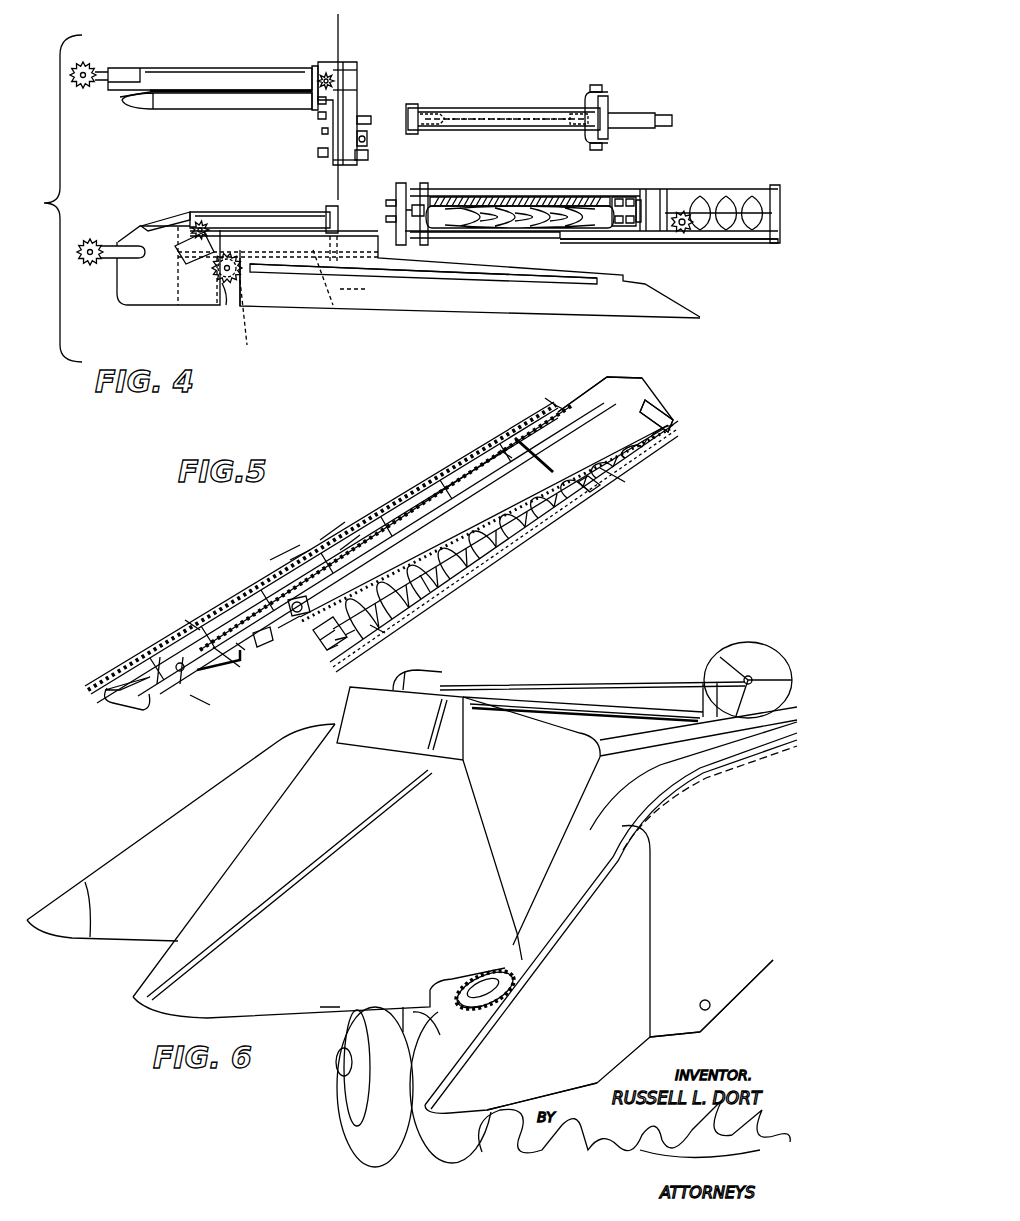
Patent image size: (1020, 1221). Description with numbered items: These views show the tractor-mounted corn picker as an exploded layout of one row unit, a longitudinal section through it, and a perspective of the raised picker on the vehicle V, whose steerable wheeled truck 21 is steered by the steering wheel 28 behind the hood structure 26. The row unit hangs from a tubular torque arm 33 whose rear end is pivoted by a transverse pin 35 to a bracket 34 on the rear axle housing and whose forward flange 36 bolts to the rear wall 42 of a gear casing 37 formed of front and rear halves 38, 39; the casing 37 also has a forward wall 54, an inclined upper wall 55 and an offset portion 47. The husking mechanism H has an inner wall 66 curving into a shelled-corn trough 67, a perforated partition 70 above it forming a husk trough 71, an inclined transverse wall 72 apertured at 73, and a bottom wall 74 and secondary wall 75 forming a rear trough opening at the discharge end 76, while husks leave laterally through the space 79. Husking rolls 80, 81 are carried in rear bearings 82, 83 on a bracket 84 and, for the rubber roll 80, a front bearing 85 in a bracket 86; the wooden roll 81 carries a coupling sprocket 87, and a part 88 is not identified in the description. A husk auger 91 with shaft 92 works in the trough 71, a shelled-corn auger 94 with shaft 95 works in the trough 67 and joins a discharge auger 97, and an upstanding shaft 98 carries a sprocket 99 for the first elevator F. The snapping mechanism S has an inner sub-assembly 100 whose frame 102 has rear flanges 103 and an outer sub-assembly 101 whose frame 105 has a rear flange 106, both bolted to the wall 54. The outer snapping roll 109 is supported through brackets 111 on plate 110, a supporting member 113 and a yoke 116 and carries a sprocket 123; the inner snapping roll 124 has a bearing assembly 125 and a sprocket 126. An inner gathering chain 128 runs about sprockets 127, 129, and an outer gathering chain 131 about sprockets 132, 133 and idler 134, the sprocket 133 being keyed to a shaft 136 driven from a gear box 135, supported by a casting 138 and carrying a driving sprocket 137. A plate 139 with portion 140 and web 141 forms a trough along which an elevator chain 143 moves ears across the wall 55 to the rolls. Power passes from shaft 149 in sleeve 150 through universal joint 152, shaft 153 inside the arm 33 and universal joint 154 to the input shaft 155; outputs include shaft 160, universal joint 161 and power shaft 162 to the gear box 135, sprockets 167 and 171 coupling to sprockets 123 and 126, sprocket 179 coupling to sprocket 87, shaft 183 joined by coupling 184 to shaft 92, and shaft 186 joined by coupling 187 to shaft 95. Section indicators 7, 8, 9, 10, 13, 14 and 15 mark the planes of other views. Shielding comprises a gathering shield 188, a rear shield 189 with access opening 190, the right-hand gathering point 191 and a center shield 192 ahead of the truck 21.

In FIG. 4, the section line 7- 7 is at (204, 195).
In FIG. 4, the section line 8- 8 is at (324, 22).
In FIG. 4, the section line 9- 9 is at (354, 33).
In FIG. 4, the section line 10- 10 is at (404, 132).
In FIG. 4, the section line 13- 13 is at (412, 163).
In FIG. 4, the section line 14- 14 is at (330, 208).
In FIG. 4, the section line 15- 15 is at (306, 38).
In FIG. 6, the steerable wheeled truck 21 is at (400, 1160).
In FIG. 6, the radiator and engine hood structure 26 is at (465, 680).
In FIG. 6, the steering wheel 28 is at (760, 640).
In FIG. 4, the torque arm 33 is at (512, 108).
In FIG. 4, the bracket 34 is at (608, 100).
In FIG. 4, the transverse pivot pin 35 is at (595, 85).
In FIG. 4, the flange 36 is at (412, 106).
In FIG. 4, the casing 37 is at (349, 67).
In FIG. 5, the casing 37 is at (347, 646).
In FIG. 5, the front half of casing 38 is at (330, 651).
In FIG. 5, the rear half of casing 39 is at (352, 640).
In FIG. 4, the rear wall 42 is at (350, 86).
In FIG. 4, the offset casing portion 47 is at (345, 80).
In FIG. 5, the offset casing portion 47 is at (300, 553).
In FIG. 5, the forward wall 54 is at (330, 646).
In FIG. 4, the upper transverse wall 55 is at (354, 163).
In FIG. 4, the inner longitudinal wall 66 is at (634, 190).
In FIG. 5, the inner longitudinal wall 66 is at (637, 378).
In FIG. 5, the trough 67 is at (535, 522).
In FIG. 5, the longitudinal partition 70 is at (475, 560).
In FIG. 5, the second trough 71 is at (450, 570).
In FIG. 4, the forwardly inclined transverse wall 72 is at (672, 195).
In FIG. 5, the forwardly inclined transverse wall 72 is at (515, 460).
In FIG. 5, the aperture 73 is at (586, 494).
In FIG. 5, the bottom wall 74 is at (615, 481).
In FIG. 4, the secondary substantially vertical wall 75 is at (735, 243).
In FIG. 4, the discharge end 76 is at (776, 190).
In FIG. 5, the discharge end 76 is at (672, 420).
In FIG. 5, the discharge space 79 is at (490, 460).
In FIG. 4, the inner husking roll 80 is at (462, 204).
In FIG. 4, the outer husking roll 81 is at (510, 228).
In FIG. 5, the outer husking roll 81 is at (440, 480).
In FIG. 4, the bearing 82 is at (638, 196).
In FIG. 4, the bearing 83 is at (630, 228).
In FIG. 5, the bearing 83 is at (505, 455).
In FIG. 4, the transverse bracket 84 is at (619, 228).
In FIG. 4, the bearing 85 is at (426, 196).
In FIG. 4, the bracket 86 is at (434, 198).
In FIG. 4, the sprocket 87 is at (420, 216).
In FIG. 4, the support plate 88 is at (598, 240).
In FIG. 5, the husk auger 91 is at (410, 510).
In FIG. 4, the shaft portion 92 is at (396, 224).
In FIG. 5, the shelled-corn auger 94 is at (425, 585).
In FIG. 4, the shaft portion 95 is at (398, 205).
In FIG. 4, the discharge auger 97 is at (732, 200).
In FIG. 5, the discharge auger 97 is at (645, 405).
In FIG. 4, the upstanding shaft 98 is at (688, 230).
In FIG. 5, the upstanding shaft 98 is at (562, 405).
In FIG. 4, the sprocket 99 is at (680, 233).
In FIG. 5, the sprocket 99 is at (550, 400).
In FIG. 4, the inner sub-assembly 100 is at (201, 60).
In FIG. 4, the outer sub-assembly 101 is at (262, 300).
In FIG. 5, the outer sub-assembly 101 is at (208, 706).
In FIG. 4, the frame element 102 is at (158, 68).
In FIG. 4, the flanges 103 is at (310, 66).
In FIG. 4, the frame member 105 is at (290, 271).
In FIG. 4, the rear flange 106 is at (365, 290).
In FIG. 5, the rear flange 106 is at (297, 613).
In FIG. 4, the snapping roll 109 is at (243, 221).
In FIG. 4, the upper horizontal plate portion 110 is at (135, 305).
In FIG. 5, the upper horizontal plate portion 110 is at (130, 715).
In FIG. 5, the upstanding brackets 111 is at (160, 700).
In FIG. 5, the snapping roll supporting member 113 is at (182, 705).
In FIG. 6, the snapping roll supporting member 113 is at (712, 1008).
In FIG. 4, the yoke 116 is at (160, 222).
In FIG. 4, the sprocket 123 is at (325, 212).
In FIG. 4, the snapping roll 124 is at (215, 105).
In FIG. 4, the bearing assembly 125 is at (150, 95).
In FIG. 4, the sprocket 126 is at (316, 90).
In FIG. 4, the sprocket 127 is at (90, 66).
In FIG. 5, the endless gathering chain 128 is at (250, 572).
In FIG. 6, the endless gathering chain 128 is at (448, 975).
In FIG. 4, the sprocket 129 is at (334, 76).
In FIG. 5, the sprocket 129 is at (280, 555).
In FIG. 5, the outer gathering chain 131 is at (133, 653).
In FIG. 4, the sprocket 132 is at (90, 238).
In FIG. 4, the sprocket 133 is at (226, 284).
In FIG. 5, the sprocket 133 is at (190, 623).
In FIG. 4, the idler sprocket 134 is at (205, 222).
In FIG. 5, the gear box 135 is at (228, 666).
In FIG. 4, the upstanding shaft 136 is at (212, 272).
In FIG. 5, the upstanding shaft 136 is at (175, 662).
In FIG. 4, the driving sprocket 137 is at (247, 323).
In FIG. 5, the driving sprocket 137 is at (205, 672).
In FIG. 5, the casting 138 is at (237, 598).
In FIG. 4, the plate 139 is at (445, 308).
In FIG. 5, the plate 139 is at (330, 558).
In FIG. 4, the portion 140 is at (260, 230).
In FIG. 4, the upstanding sheet metal web 141 is at (505, 283).
In FIG. 5, the endless elevator chain 143 is at (347, 547).
In FIG. 4, the shaft 149 is at (664, 119).
In FIG. 4, the sleeve 150 is at (632, 114).
In FIG. 4, the universal joint connection 152 is at (580, 113).
In FIG. 4, the shaft 153 is at (490, 110).
In FIG. 4, the universal joint connection 154 is at (432, 116).
In FIG. 4, the input shaft 155 is at (368, 116).
In FIG. 4, the output shaft 160 is at (318, 153).
In FIG. 5, the universal joint 161 is at (287, 640).
In FIG. 5, the power shaft 162 is at (265, 647).
In FIG. 4, the sprocket 167 is at (322, 131).
In FIG. 4, the sprocket 171 is at (318, 106).
In FIG. 4, the sprocket 179 is at (366, 139).
In FIG. 4, the output shaft 183 is at (368, 134).
In FIG. 5, the coupling 184 is at (322, 628).
In FIG. 4, the output shaft 186 is at (368, 152).
In FIG. 5, the coupling 187 is at (380, 629).
In FIG. 6, the gathering shield 188 is at (604, 962).
In FIG. 6, the rear shielding part 189 is at (740, 892).
In FIG. 6, the opening 190 is at (707, 1000).
In FIG. 6, the gathering point 191 is at (180, 812).
In FIG. 6, the center shield 192 is at (334, 829).
In FIG. 4, the husking mechanism H is at (555, 241).
In FIG. 5, the husking mechanism H is at (506, 546).
In FIG. 5, the snapping and gathering mechanism S is at (160, 628).
In FIG. 6, the snapping and gathering mechanism S is at (162, 869).
In FIG. 5, the first elevator F is at (375, 494).
In FIG. 6, the vehicle V is at (438, 680).